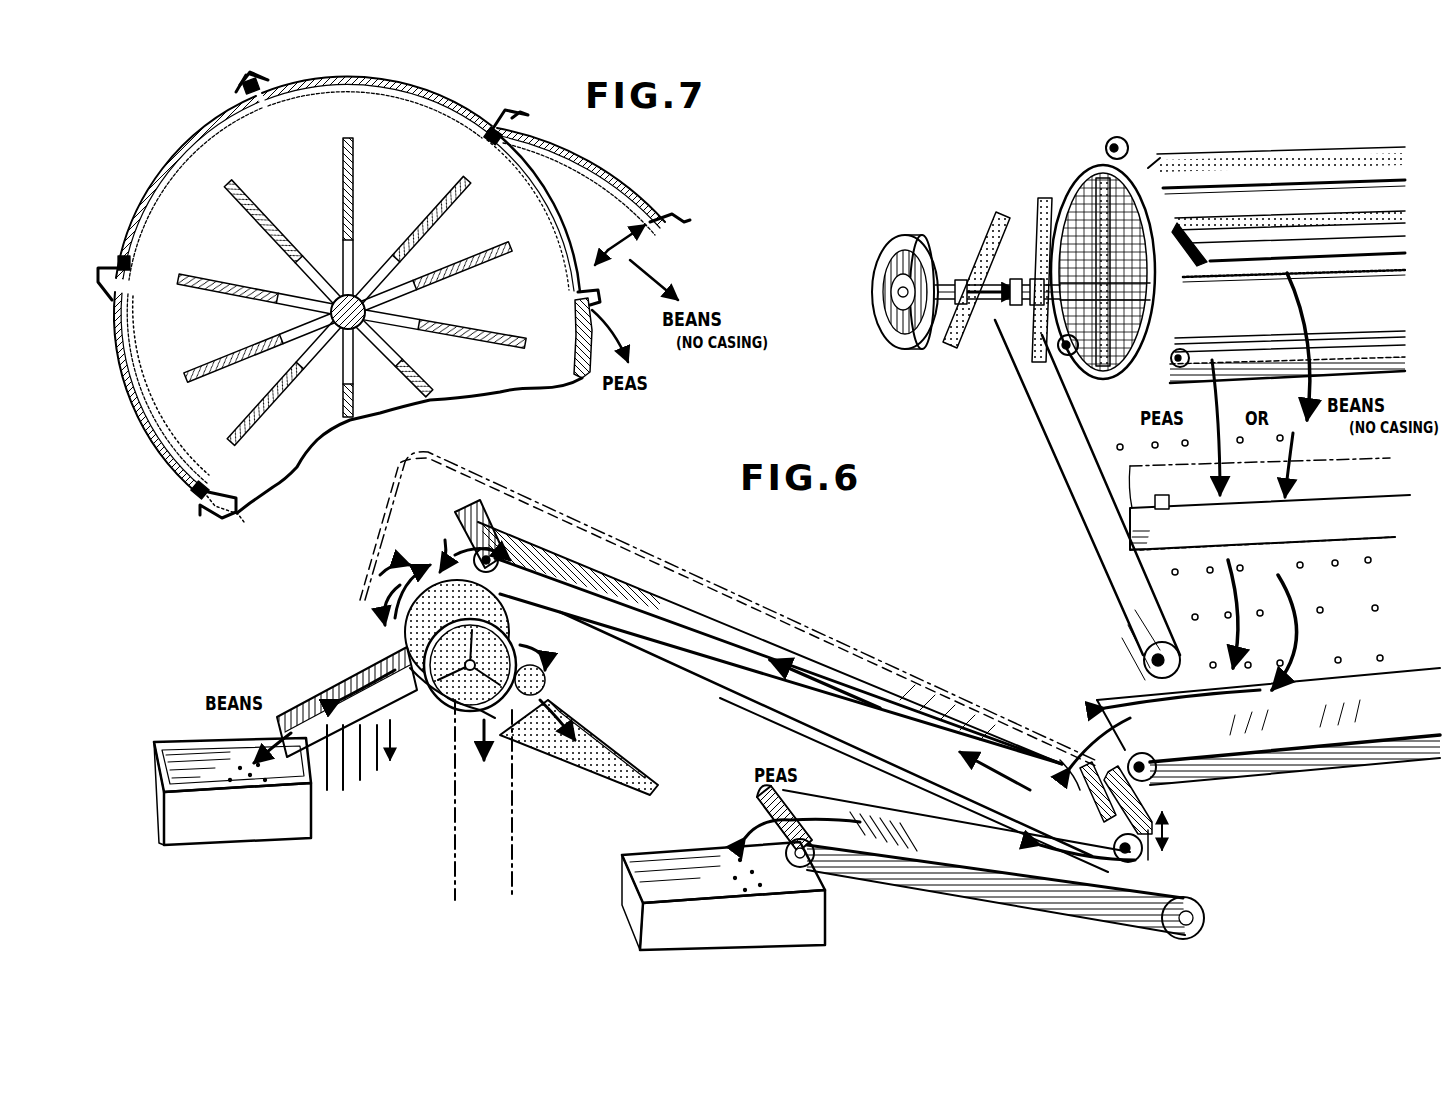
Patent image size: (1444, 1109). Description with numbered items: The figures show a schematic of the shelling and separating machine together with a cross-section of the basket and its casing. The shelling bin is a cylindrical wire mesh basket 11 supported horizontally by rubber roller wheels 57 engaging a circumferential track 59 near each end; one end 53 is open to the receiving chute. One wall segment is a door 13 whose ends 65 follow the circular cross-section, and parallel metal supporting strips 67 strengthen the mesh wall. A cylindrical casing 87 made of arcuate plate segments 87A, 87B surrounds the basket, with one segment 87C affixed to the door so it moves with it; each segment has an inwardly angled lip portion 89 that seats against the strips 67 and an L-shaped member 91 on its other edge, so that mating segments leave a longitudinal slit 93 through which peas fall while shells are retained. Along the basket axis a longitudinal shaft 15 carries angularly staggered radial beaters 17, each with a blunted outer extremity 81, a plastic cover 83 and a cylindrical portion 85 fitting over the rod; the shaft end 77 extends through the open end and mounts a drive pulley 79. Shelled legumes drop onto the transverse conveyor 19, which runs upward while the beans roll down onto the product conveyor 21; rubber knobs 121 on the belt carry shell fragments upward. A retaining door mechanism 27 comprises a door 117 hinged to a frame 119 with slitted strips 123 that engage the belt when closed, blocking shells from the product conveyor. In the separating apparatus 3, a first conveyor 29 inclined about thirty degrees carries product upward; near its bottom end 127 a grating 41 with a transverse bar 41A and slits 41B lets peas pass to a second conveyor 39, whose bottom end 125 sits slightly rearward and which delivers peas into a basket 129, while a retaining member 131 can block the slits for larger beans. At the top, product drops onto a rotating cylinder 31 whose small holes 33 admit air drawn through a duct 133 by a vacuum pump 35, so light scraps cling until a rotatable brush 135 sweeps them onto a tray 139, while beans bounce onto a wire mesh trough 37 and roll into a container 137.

In FIG. 6, the separating apparatus 3 is at (815, 597).
In FIG. 7, the wire mesh basket 11 is at (250, 90).
In FIG. 6, the wire mesh basket 11 is at (1160, 165).
In FIG. 7, the door 13 is at (628, 205).
In FIG. 6, the door 13 is at (1248, 213).
In FIG. 7, the longitudinal shaft 15 is at (350, 335).
In FIG. 6, the longitudinal shaft 15 is at (945, 283).
In FIG. 7, the radial beaters 17 is at (345, 252).
In FIG. 6, the radial beaters 17 is at (1090, 168).
In FIG. 6, the transverse conveyor 19 is at (1050, 462).
In FIG. 6, the product conveyor 21 is at (1358, 765).
In FIG. 6, the retaining door mechanism 27 is at (1135, 508).
In FIG. 6, the first conveyor 29 is at (656, 585).
In FIG. 6, the cylinder 31 is at (440, 530).
In FIG. 6, the small holes 33 is at (395, 603).
In FIG. 6, the vacuum pump 35 is at (512, 852).
In FIG. 6, the wire mesh trough 37 is at (328, 685).
In FIG. 6, the second conveyor 39 is at (1085, 915).
In FIG. 6, the grating 41 is at (1045, 745).
In FIG. 6, the bar 41A is at (1085, 748).
In FIG. 6, the slits 41B is at (1083, 847).
In FIG. 6, the open end 53 is at (1090, 175).
In FIG. 6, the rubber roller wheels 57 is at (1120, 138).
In FIG. 6, the circumferential track 59 is at (1160, 170).
In FIG. 6, the door ends 65 is at (1180, 268).
In FIG. 7, the metal supporting strips 67 is at (262, 95).
In FIG. 6, the shaft end 77 is at (895, 293).
In FIG. 6, the pulley 79 is at (903, 345).
In FIG. 7, the outer extremity 81 is at (482, 347).
In FIG. 6, the outer extremity 81 is at (990, 228).
In FIG. 6, the plastic covers 83 is at (1035, 352).
In FIG. 6, the cylindrical portion 85 is at (1040, 282).
In FIG. 7, the cylindrical casing 87 is at (415, 70).
In FIG. 6, the cylindrical casing 87 is at (1300, 158).
In FIG. 7, the arcuate wall plate segment 87A is at (170, 155).
In FIG. 7, the arcuate wall plate segment 87B is at (128, 403).
In FIG. 7, the door casing segment 87C is at (605, 165).
In FIG. 7, the lip portion 89 is at (272, 90).
In FIG. 6, the lip portion 89 is at (1328, 276).
In FIG. 7, the L-shaped member 91 is at (238, 85).
In FIG. 6, the L-shaped member 91 is at (1222, 175).
In FIG. 7, the longitudinal slit 93 is at (128, 288).
In FIG. 6, the longitudinal slit 93 is at (1328, 187).
In FIG. 6, the retaining door 117 is at (1270, 523).
In FIG. 6, the frame 119 is at (1266, 483).
In FIG. 6, the knobs 121 is at (1210, 570).
In FIG. 6, the strips 123 is at (1262, 548).
In FIG. 6, the bottom end of second conveyor 125 is at (1210, 925).
In FIG. 6, the bottom end of first conveyor 127 is at (1125, 860).
In FIG. 6, the basket 129 is at (723, 896).
In FIG. 6, the retaining member 131 is at (1140, 795).
In FIG. 6, the duct 133 is at (465, 730).
In FIG. 6, the rotatable brush 135 is at (546, 672).
In FIG. 6, the container 137 is at (232, 791).
In FIG. 6, the tray 139 is at (590, 768).